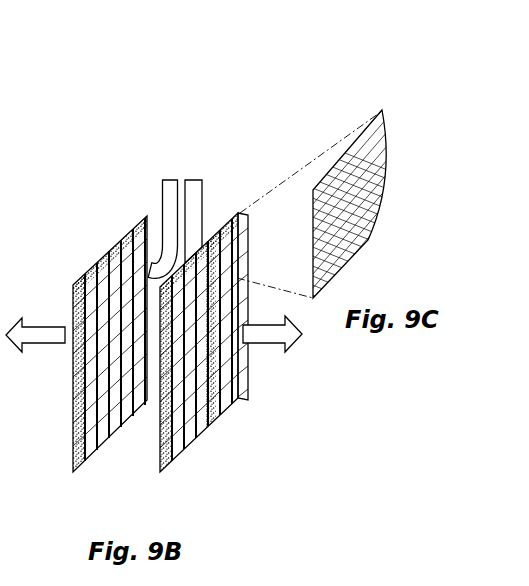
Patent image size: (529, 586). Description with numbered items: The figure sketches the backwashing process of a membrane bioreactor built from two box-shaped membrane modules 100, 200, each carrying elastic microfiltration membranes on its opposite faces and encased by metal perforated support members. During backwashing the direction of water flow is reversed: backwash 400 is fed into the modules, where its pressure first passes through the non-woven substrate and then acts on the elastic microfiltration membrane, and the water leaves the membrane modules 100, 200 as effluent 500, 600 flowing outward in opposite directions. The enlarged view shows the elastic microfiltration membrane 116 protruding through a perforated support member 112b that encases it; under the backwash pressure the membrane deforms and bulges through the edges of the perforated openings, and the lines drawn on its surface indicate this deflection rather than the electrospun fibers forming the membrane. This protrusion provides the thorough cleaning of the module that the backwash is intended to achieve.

In FIG. 9B, the membrane module 100 is at (110, 248).
In FIG. 9B, the membrane module 200 is at (238, 213).
In FIG. 9B, the backwash 400 is at (194, 178).
In FIG. 9B, the effluent 500 is at (44, 325).
In FIG. 9B, the effluent 600 is at (302, 345).
In FIG. 9B, the perforated support member 112b is at (250, 368).
In FIG. 9C, the elastic microfiltration membrane 116 is at (383, 112).